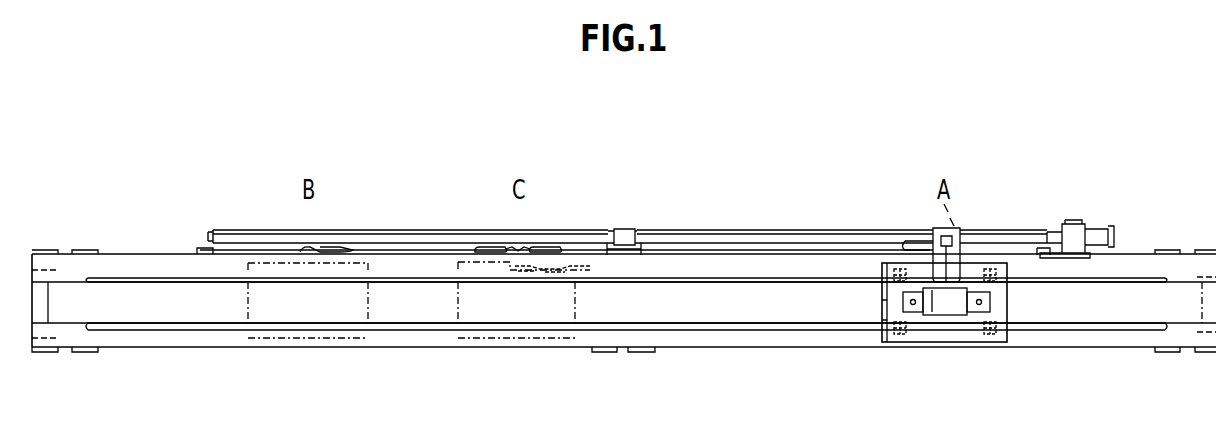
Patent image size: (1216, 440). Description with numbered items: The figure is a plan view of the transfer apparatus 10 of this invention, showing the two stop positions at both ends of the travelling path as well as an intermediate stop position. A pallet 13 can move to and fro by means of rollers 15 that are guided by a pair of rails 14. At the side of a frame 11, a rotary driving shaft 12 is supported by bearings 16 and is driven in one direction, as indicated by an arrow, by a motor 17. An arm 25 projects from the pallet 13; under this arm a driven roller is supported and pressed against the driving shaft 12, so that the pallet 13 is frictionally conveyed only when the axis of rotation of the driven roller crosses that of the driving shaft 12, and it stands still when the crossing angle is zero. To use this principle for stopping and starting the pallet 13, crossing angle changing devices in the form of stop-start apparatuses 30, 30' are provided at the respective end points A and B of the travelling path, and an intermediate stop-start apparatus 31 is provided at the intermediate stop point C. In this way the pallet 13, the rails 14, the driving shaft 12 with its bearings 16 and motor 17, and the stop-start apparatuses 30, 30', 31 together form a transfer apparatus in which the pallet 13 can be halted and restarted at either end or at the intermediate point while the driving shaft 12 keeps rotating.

The linear actuator apparatus 10 is at (1075, 168).
The frame 11 is at (1188, 262).
The rotary driving shaft 12 is at (822, 231).
The pallet 13 is at (975, 343).
The rails 14 is at (1107, 282).
The rollers 15 is at (900, 343).
The bearings 16 is at (213, 230).
The motor 17 is at (1090, 232).
The arm 25 is at (961, 228).
The stop-start apparatus 30 is at (895, 211).
The stop-start apparatus 30' is at (344, 212).
The intermediate stop-start apparatus 31 is at (482, 242).